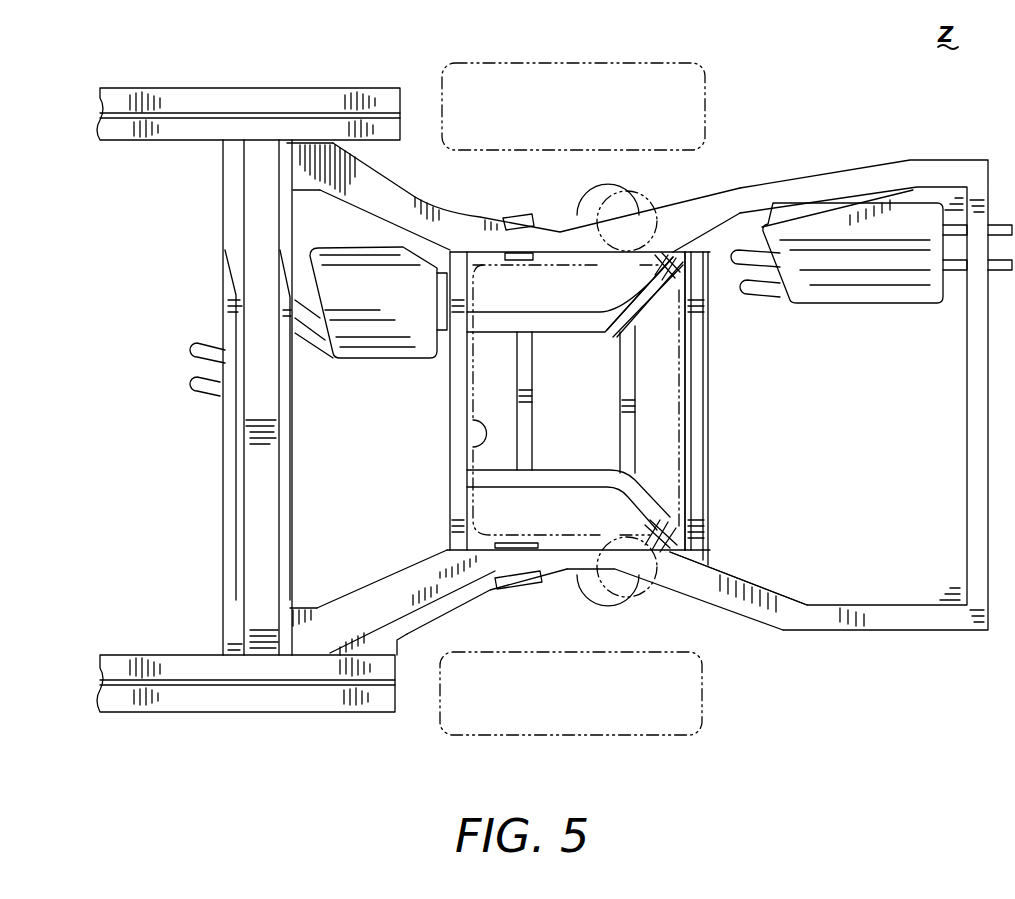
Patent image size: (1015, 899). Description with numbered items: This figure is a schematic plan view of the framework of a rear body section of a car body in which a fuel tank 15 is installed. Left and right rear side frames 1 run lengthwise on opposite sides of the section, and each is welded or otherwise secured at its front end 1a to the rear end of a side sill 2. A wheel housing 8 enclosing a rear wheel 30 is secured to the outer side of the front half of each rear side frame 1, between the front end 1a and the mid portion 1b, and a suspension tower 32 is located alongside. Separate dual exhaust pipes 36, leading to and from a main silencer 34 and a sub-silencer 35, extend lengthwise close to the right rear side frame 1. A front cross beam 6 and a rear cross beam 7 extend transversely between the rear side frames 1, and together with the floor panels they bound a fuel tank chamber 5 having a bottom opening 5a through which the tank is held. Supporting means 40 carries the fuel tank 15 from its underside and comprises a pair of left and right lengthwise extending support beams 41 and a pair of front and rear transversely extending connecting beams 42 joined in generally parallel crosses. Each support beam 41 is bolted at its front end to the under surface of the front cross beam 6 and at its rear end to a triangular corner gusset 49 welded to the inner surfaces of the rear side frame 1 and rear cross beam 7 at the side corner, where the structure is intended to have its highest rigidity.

The rear side frame 1 is at (848, 168).
The front end 1a is at (300, 165).
The mid portion 1b is at (568, 232).
The side sill 2 is at (166, 88).
The fuel tank chamber 5 is at (680, 440).
The bottom opening 5a is at (473, 440).
The front cross beam 6 is at (455, 500).
The rear cross beam 7 is at (700, 502).
The wheel housing 8 is at (452, 200).
The fuel tank 15 is at (700, 360).
The rear wheel 30 is at (712, 68).
The suspension tower 32 is at (640, 200).
The main silencer 34 is at (880, 303).
The sub-silencer 35 is at (373, 347).
The dual exhaust pipes 36 is at (762, 268).
The supporting means 40 is at (573, 309).
The support beam 41 is at (603, 340).
The connecting beam 42 is at (520, 407).
The triangular corner gusset 49 is at (653, 278).